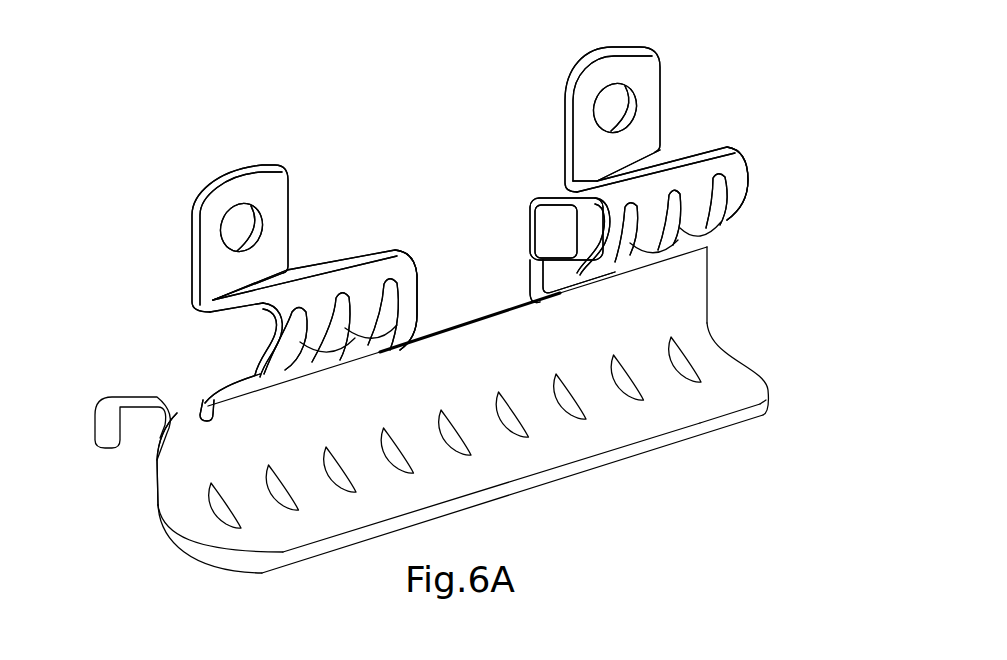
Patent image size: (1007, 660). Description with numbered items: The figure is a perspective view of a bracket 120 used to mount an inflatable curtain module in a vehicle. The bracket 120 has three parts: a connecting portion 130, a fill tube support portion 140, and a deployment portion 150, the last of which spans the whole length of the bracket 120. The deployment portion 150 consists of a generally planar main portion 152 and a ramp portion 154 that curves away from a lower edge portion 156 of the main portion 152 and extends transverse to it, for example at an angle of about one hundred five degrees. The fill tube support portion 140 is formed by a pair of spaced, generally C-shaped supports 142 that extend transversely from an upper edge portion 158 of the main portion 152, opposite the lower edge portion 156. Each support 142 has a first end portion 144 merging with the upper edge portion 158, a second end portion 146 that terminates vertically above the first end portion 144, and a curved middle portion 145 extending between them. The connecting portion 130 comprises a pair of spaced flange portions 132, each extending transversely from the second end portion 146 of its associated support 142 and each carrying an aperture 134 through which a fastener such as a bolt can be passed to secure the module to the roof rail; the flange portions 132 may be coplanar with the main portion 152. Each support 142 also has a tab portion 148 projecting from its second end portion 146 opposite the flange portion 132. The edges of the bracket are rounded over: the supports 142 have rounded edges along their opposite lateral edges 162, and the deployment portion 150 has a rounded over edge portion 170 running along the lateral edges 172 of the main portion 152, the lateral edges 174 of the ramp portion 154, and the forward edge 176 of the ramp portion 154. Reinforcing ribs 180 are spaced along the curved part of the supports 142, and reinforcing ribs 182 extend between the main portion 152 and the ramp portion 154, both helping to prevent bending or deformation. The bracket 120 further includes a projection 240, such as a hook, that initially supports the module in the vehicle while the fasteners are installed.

The bracket 120 is at (200, 133).
The connecting portion 130 is at (150, 270).
The flange portion 132 is at (262, 185).
The aperture 134 is at (236, 229).
The fill tube support portion 140 is at (137, 342).
The support 142 is at (317, 347).
The first end portion 144 is at (279, 382).
The middle portion 145 is at (372, 305).
The second end portion 146 is at (354, 265).
The tab portion 148 is at (548, 226).
The deployment portion 150 is at (113, 523).
The main portion 152 is at (463, 357).
The ramp portion 154 is at (703, 413).
The lower edge portion 156 is at (190, 480).
The upper edge portion 158 is at (500, 307).
The lateral edges 162 is at (276, 350).
The rounded over edge portion 170 is at (364, 537).
The lateral edges 172 is at (157, 486).
The lateral edges 174 is at (213, 566).
The forward edge 176 is at (563, 477).
The reinforcing ribs 180 is at (378, 342).
The reinforcing ribs 182 is at (461, 440).
The projections 240 is at (107, 428).